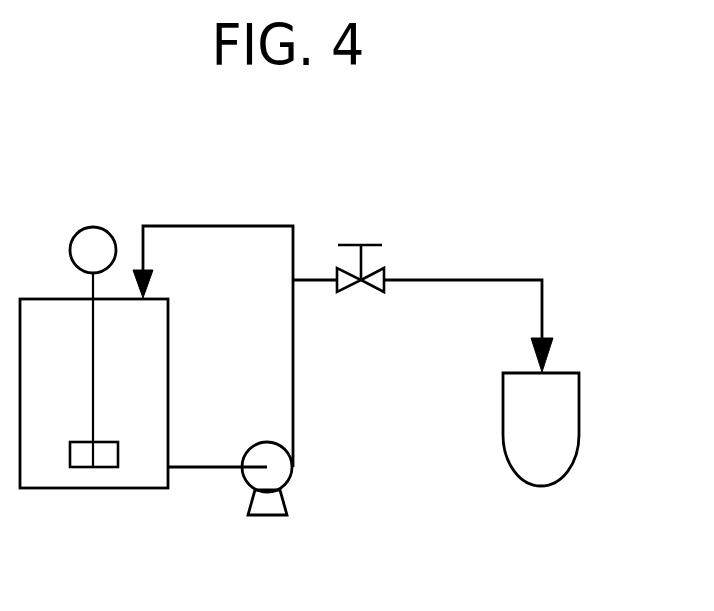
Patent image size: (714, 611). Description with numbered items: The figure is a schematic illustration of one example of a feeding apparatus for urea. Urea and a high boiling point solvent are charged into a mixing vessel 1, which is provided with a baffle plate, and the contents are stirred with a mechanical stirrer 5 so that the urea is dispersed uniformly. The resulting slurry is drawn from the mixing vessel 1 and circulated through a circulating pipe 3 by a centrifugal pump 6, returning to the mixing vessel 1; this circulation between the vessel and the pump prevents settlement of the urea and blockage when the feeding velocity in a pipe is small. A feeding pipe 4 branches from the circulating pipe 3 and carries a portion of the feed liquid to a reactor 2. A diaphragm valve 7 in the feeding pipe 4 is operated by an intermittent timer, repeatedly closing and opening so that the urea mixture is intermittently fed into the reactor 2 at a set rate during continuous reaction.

The mixing vessel 1 is at (93, 480).
The reactor 2 is at (549, 408).
The circulating pipe 3 is at (214, 226).
The feeding pipe 4 is at (478, 280).
The mechanical stirrer 5 is at (96, 227).
The centrifugal pump 6 is at (258, 501).
The diaphragm valve 7 is at (362, 293).